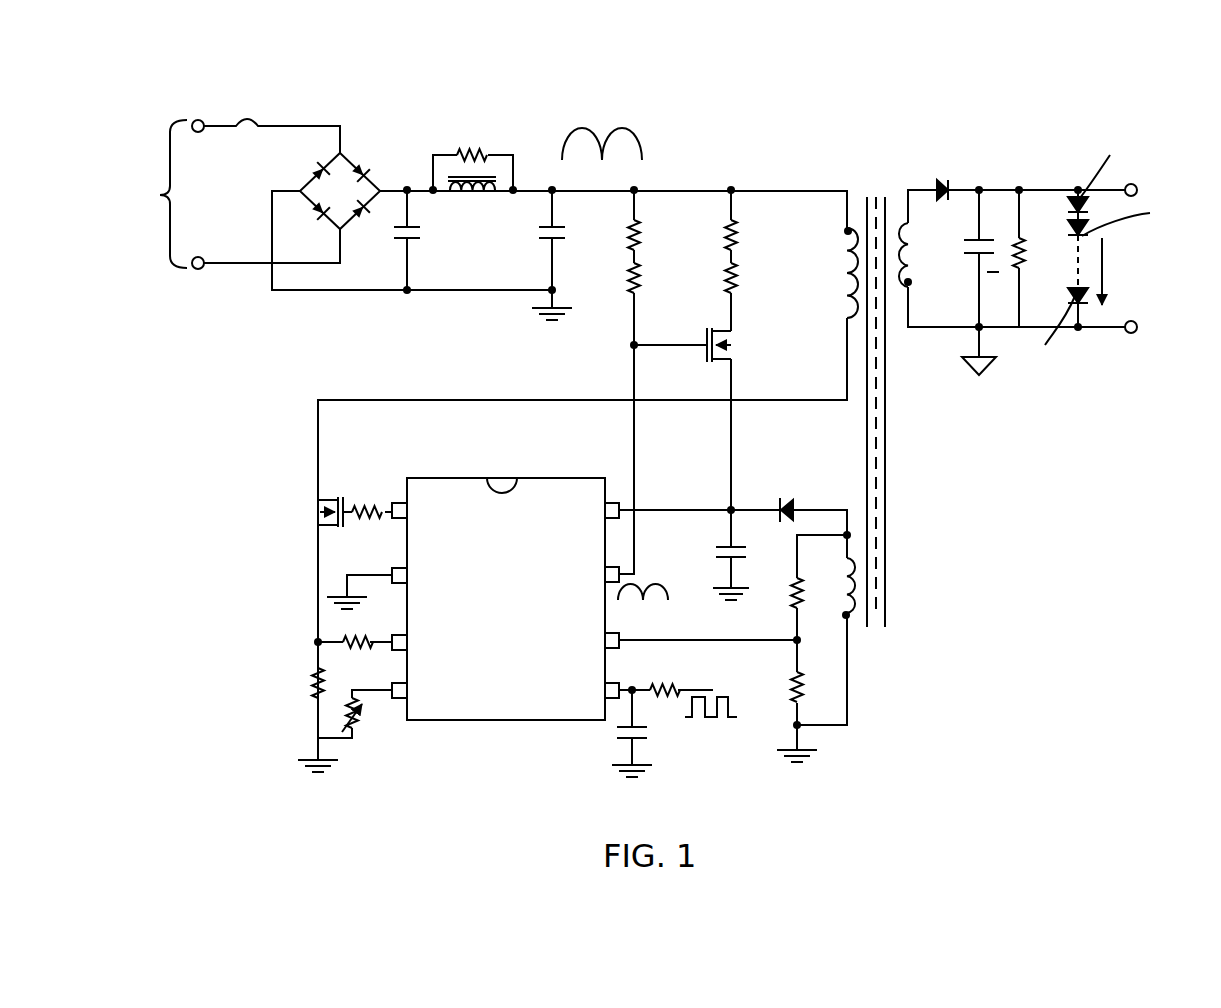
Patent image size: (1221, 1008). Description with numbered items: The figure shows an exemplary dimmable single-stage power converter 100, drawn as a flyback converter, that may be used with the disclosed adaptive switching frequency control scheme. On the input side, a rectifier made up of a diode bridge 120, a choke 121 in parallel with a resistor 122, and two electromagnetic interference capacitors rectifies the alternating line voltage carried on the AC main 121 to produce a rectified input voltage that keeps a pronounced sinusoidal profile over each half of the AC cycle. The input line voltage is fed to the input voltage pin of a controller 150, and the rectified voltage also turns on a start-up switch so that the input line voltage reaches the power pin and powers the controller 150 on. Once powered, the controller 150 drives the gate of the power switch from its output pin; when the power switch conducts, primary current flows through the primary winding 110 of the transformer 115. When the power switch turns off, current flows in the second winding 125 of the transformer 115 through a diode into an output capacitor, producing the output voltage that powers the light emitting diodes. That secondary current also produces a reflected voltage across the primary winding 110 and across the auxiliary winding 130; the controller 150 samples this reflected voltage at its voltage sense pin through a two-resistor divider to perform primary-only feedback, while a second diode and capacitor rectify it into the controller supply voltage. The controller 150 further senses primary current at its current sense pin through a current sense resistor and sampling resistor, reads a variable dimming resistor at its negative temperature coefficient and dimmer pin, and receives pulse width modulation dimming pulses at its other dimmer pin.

The dimmable single-stage power converter 100 is at (772, 78).
The primary winding 110 is at (846, 228).
The transformer 115 is at (871, 178).
The diode bridge 120 is at (374, 146).
The choke 121 is at (485, 227).
The resistor 122 is at (470, 146).
The second winding 125 is at (911, 243).
The auxiliary winding 130 is at (851, 615).
The controller 150 is at (560, 477).